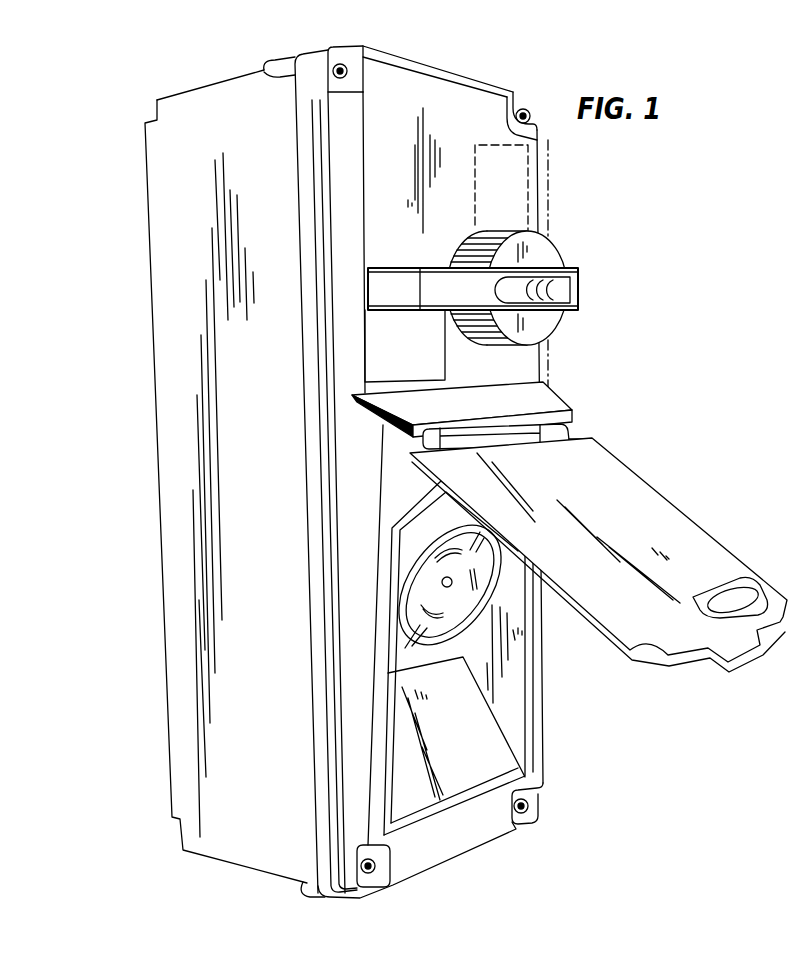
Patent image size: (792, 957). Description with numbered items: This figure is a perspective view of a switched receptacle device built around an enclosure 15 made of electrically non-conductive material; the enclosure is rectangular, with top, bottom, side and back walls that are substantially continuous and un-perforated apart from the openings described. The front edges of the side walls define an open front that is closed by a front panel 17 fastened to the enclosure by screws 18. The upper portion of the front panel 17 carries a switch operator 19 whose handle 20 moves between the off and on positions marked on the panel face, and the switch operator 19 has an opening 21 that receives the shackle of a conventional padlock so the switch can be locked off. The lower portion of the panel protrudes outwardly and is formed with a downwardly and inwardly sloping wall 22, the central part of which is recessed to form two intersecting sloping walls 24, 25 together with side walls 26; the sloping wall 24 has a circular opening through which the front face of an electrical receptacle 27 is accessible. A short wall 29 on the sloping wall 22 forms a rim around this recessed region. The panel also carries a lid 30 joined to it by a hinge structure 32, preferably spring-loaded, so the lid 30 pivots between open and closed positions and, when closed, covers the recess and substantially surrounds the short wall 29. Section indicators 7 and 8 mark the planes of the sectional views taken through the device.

The enclosure 15 is at (155, 405).
The front panel 17 is at (398, 46).
The screws 18 is at (338, 70).
The switch operator 19 is at (563, 262).
The handle 20 is at (382, 311).
The opening 21 is at (566, 290).
The section line 7- 7 is at (448, 363).
The section line 8- 8 is at (352, 687).
The sloping wall 22 is at (402, 481).
The sloping wall 24 is at (483, 608).
The sloping wall 25 is at (493, 760).
The side walls 26 is at (500, 655).
The electrical receptacle 27 is at (423, 586).
The short wall 29 is at (445, 812).
The lid 30 is at (673, 503).
The hinge structure 32 is at (578, 427).